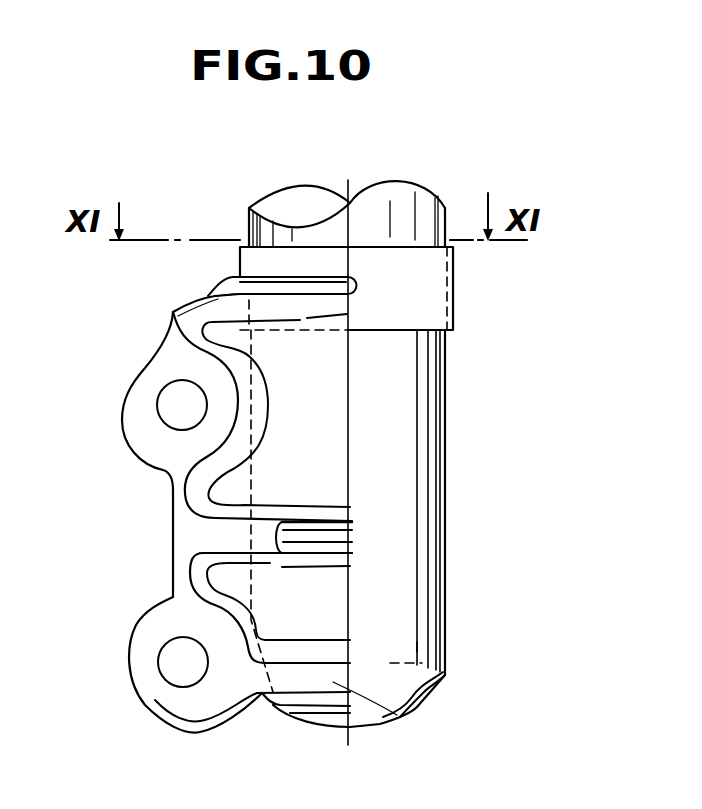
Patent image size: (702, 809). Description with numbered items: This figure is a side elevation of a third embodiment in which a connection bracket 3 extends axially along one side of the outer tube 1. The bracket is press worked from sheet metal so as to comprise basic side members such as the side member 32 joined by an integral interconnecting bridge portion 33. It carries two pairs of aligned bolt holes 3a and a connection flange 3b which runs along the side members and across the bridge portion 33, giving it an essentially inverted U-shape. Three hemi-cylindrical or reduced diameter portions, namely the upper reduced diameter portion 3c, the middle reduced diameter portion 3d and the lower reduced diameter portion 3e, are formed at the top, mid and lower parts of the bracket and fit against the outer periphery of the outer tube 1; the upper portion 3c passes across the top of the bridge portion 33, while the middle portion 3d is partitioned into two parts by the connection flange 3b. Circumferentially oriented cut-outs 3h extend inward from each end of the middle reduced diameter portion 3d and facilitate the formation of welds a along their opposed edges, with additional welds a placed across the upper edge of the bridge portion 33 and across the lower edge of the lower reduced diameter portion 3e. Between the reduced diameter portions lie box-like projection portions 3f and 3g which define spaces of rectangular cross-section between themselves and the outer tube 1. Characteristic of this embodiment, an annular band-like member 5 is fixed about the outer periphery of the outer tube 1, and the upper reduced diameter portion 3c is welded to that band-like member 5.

The outer tube 1 is at (432, 230).
The connection bracket 3 is at (163, 307).
The bolt holes 3a is at (160, 401).
The connection flange 3b is at (132, 378).
The upper reduced diameter portion 3c is at (303, 296).
The middle reduced diameter portion 3d is at (355, 518).
The lower reduced diameter portion 3e is at (410, 715).
The box-like projection portion 3f is at (340, 420).
The box-like projection portion 3g is at (335, 608).
The cut-outs 3h is at (292, 505).
The annular band-like member 5 is at (460, 295).
The second side member 32 is at (358, 377).
The bridge portion 33 is at (198, 303).
The welds a is at (352, 281).